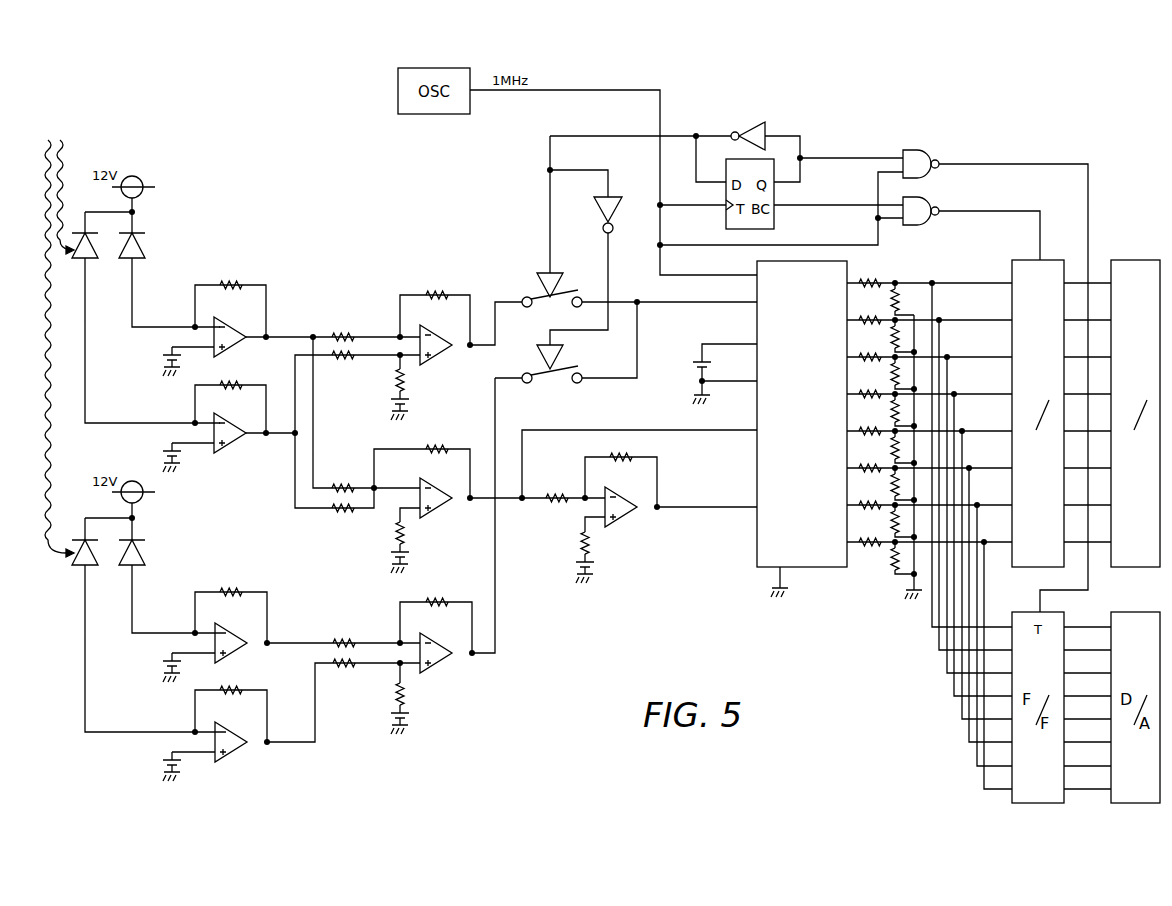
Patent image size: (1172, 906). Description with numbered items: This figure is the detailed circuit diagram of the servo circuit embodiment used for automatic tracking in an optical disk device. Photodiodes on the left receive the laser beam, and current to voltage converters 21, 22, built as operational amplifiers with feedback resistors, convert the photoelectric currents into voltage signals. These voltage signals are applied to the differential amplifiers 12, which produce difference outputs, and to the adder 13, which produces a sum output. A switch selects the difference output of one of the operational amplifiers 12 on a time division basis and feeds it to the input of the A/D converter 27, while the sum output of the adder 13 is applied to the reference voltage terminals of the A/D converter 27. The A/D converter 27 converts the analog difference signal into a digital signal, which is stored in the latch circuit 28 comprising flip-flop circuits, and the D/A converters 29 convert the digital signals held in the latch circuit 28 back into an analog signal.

The differential amplifier 12 is at (493, 290).
The adder 13 is at (672, 444).
The current to voltage converter 21 is at (272, 285).
The current to voltage converter 22 is at (277, 374).
The A/D converter 27 is at (810, 568).
The latch circuit 28 is at (1020, 260).
The D/A converters 29 is at (1138, 243).